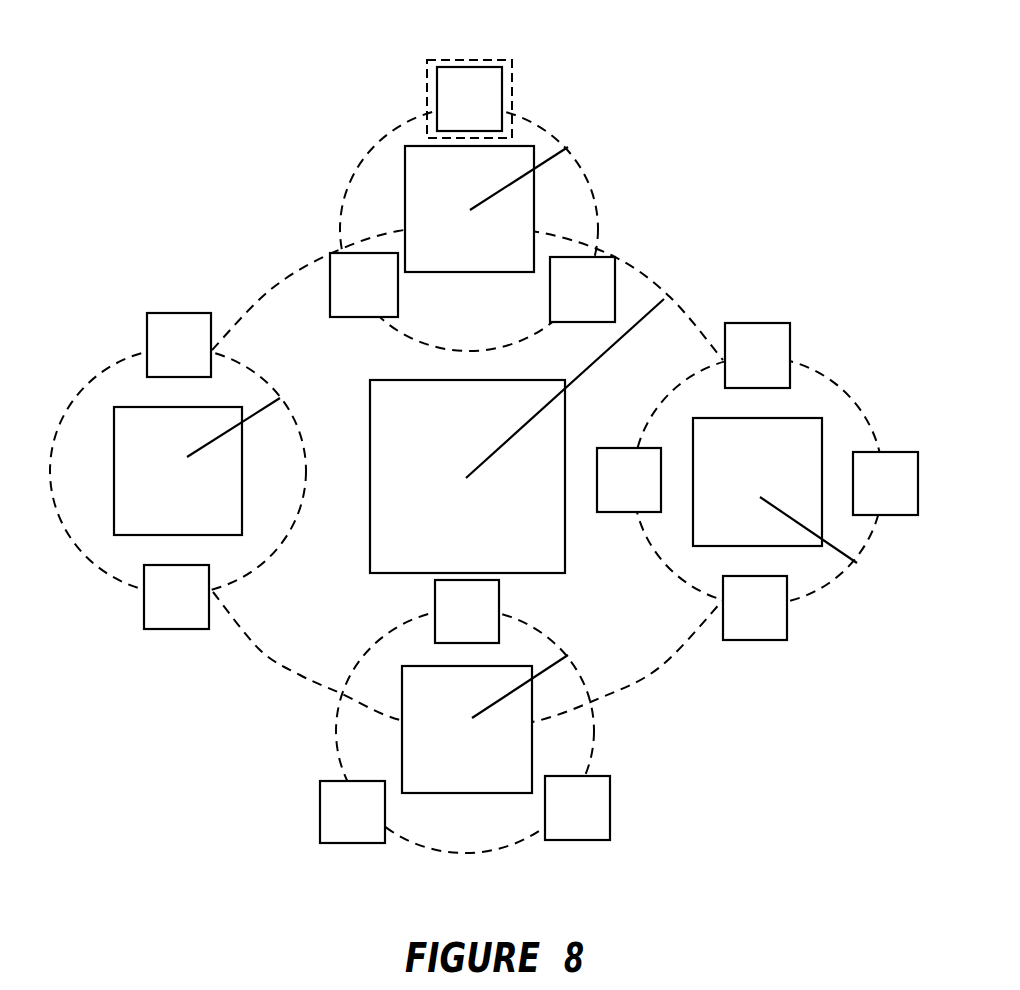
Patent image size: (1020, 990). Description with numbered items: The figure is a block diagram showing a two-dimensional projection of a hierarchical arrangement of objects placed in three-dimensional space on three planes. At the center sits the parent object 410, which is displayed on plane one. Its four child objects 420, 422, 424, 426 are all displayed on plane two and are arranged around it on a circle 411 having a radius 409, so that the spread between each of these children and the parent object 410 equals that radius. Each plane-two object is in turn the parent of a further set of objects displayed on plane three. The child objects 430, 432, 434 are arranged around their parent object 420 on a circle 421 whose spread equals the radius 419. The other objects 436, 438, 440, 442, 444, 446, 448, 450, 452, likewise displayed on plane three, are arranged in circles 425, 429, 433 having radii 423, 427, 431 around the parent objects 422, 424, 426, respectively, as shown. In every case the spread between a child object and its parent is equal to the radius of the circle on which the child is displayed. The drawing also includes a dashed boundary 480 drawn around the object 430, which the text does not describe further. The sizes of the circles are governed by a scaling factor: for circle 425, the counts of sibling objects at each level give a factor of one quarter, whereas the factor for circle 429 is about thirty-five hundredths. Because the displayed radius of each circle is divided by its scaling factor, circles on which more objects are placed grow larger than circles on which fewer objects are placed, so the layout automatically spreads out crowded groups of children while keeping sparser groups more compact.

The radius 409 is at (620, 342).
The parent object 410 is at (448, 507).
The circle 411 is at (676, 653).
The radius 419 is at (469, 229).
The object 420 is at (451, 241).
The circle 421 is at (578, 194).
The object 422 is at (738, 492).
The radius 423 is at (848, 542).
The object 424 is at (159, 481).
The circle 425 is at (843, 575).
The object 426 is at (447, 738).
The radius 427 is at (245, 420).
The circle 429 is at (280, 548).
The child object 430 is at (451, 109).
The radius 431 is at (533, 680).
The child object 432 is at (344, 298).
The circle 433 is at (580, 671).
The child object 434 is at (563, 300).
The object 436 is at (738, 365).
The object 438 is at (610, 490).
The object 440 is at (867, 493).
The object 442 is at (736, 617).
The object 444 is at (161, 355).
The object 446 is at (157, 609).
The object 448 is at (447, 620).
The object 450 is at (333, 823).
The object 452 is at (559, 820).
The virtual terminal boundary 480 is at (482, 58).